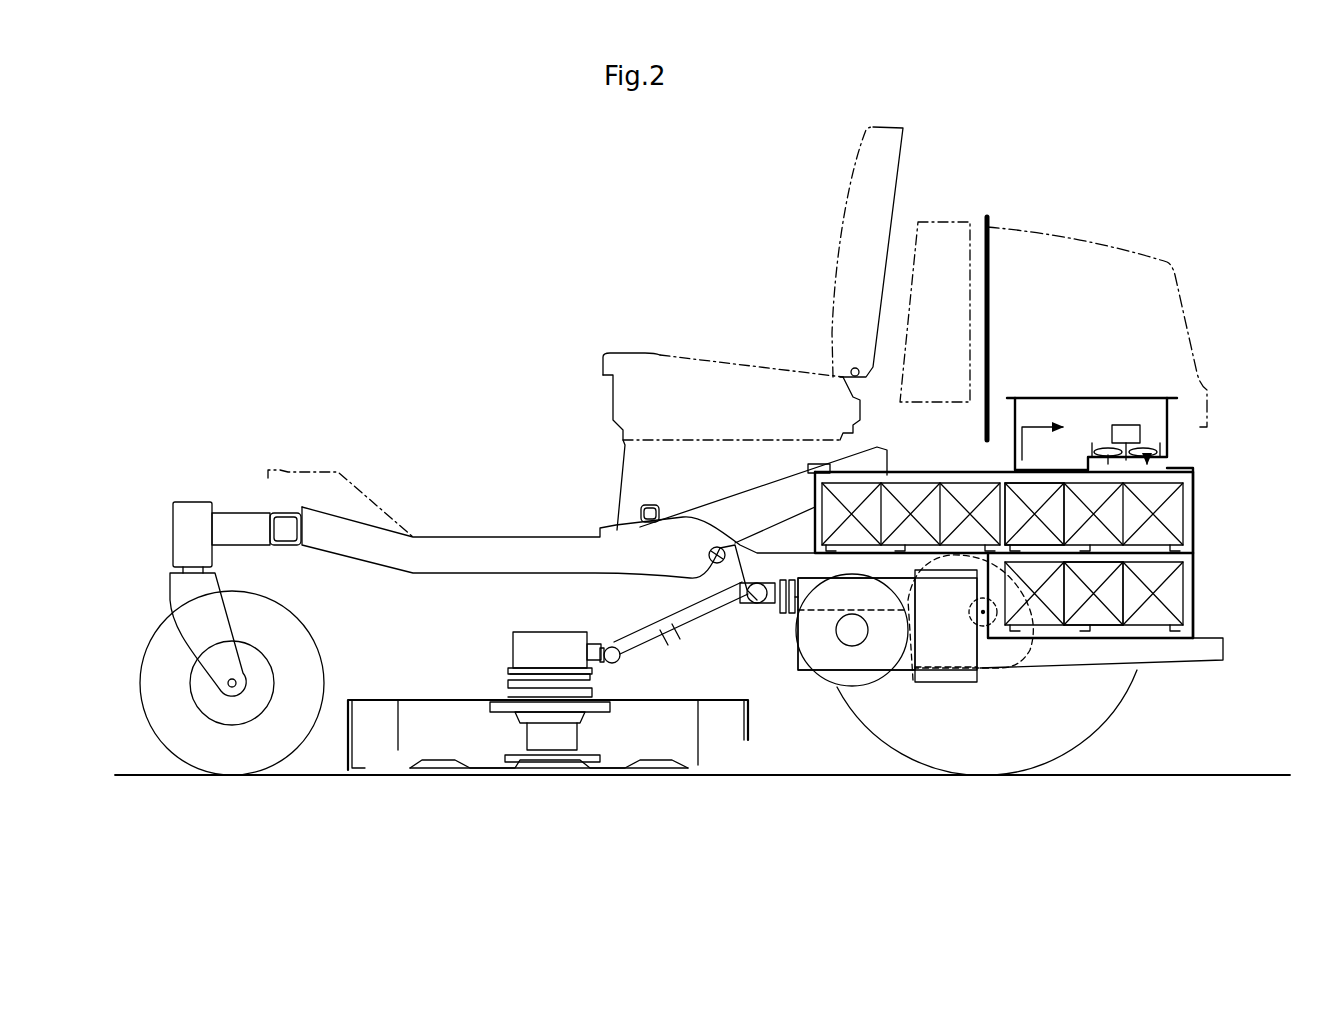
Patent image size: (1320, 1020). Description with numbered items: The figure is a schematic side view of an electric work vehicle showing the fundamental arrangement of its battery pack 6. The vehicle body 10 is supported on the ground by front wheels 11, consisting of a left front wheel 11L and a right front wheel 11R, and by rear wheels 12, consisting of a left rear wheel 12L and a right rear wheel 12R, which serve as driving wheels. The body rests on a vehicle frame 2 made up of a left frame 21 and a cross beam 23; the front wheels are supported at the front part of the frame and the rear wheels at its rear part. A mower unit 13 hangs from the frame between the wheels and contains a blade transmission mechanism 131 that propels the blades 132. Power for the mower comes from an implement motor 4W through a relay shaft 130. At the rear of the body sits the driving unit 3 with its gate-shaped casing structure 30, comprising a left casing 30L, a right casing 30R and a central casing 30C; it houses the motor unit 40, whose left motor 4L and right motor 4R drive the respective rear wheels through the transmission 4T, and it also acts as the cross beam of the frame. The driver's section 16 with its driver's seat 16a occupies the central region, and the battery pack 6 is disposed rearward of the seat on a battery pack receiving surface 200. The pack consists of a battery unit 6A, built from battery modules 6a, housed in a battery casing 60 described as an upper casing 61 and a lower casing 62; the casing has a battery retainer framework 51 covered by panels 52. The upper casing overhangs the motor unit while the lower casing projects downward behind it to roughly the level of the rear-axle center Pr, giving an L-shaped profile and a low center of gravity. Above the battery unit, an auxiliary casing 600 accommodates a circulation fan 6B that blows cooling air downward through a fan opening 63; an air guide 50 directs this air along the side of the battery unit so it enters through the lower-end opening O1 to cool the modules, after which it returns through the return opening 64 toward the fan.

The driver's section 16 is at (584, 196).
The driver's seat 16a is at (656, 356).
The vehicle body 10 is at (323, 505).
The auxiliary casing 600 is at (1177, 402).
The vehicle frame 2 is at (530, 535).
The left frame 21 is at (455, 566).
The cross beam 23 is at (283, 512).
The front wheels 11 is at (257, 666).
The left front wheel 11L is at (233, 768).
The right front wheel 11R is at (257, 666).
The mower unit 13 is at (413, 686).
The blade transmission mechanism 131 is at (547, 632).
The blades 132 is at (515, 768).
The relay shaft 130 is at (692, 625).
The central casing 30C is at (787, 702).
The motor unit 40 is at (787, 702).
The left motor 4L is at (787, 702).
The right motor 4R is at (825, 660).
The implement motor 4W is at (942, 676).
The left casing 30L is at (913, 680).
The right casing 30R is at (930, 693).
The transmission 4T is at (930, 693).
The driving unit 3 is at (826, 495).
The casing structure 30 is at (808, 570).
The rear-axle center Pr is at (983, 614).
The rear wheels 12 is at (1012, 750).
The left rear wheel 12L is at (1020, 762).
The right rear wheel 12R is at (1012, 750).
The air guide 50 is at (1195, 490).
The battery casing 60 is at (1028, 532).
The upper casing 61 is at (914, 470).
The lower casing 62 is at (1163, 640).
The battery module 6a is at (978, 510).
The battery unit 6A is at (1108, 630).
The fan opening 63 is at (1137, 470).
The lower-end opening O1 is at (1188, 565).
The battery pack receiving surface 200 is at (1213, 660).
The battery pack 6 is at (1092, 394).
The return opening 64 is at (1030, 460).
The circulation fan 6B is at (1128, 424).
The battery retainer framework 51 is at (1222, 441).
The panels 52 is at (1170, 435).